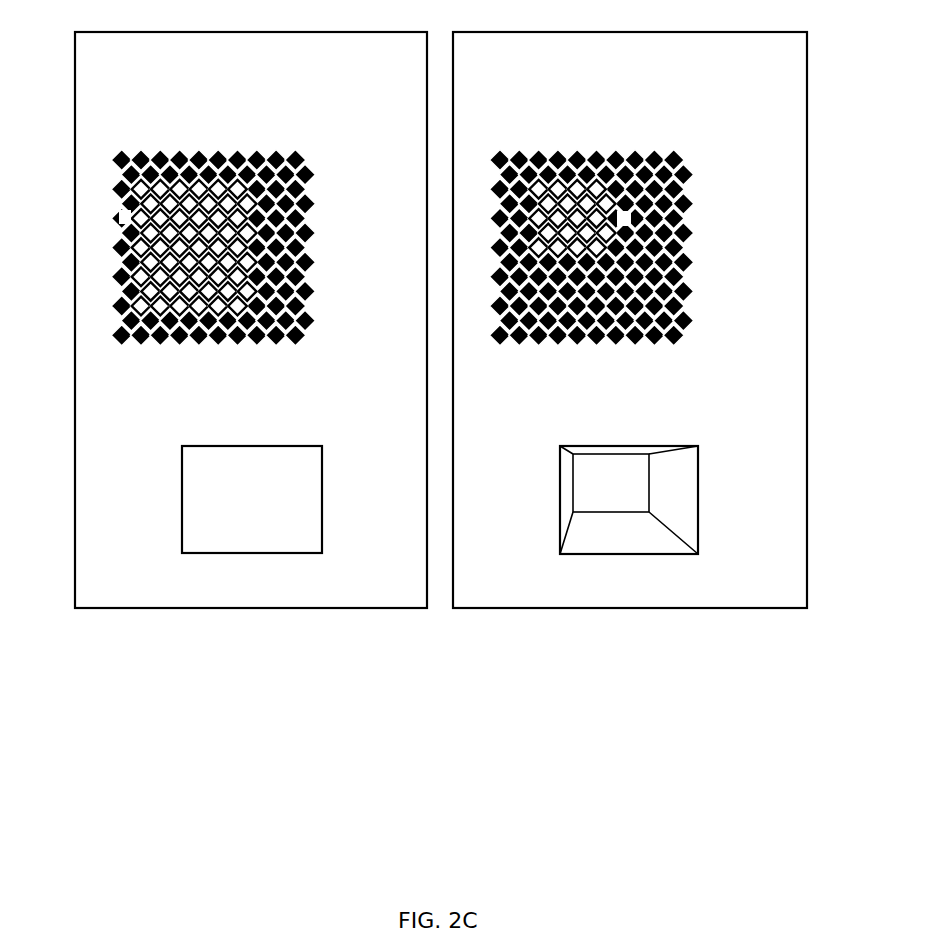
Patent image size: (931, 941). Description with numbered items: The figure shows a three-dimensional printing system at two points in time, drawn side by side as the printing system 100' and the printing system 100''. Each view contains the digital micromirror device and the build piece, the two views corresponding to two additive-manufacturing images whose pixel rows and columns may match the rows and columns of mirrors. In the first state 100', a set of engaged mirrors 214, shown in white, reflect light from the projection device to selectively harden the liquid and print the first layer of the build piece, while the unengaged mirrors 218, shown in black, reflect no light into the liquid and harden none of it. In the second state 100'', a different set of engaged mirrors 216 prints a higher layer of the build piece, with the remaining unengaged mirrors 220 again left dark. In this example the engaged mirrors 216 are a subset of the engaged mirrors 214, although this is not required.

The 3D printing system 100' is at (251, 304).
The 3D printing system 100'' is at (630, 304).
The engaged mirrors 214 is at (119, 217).
The engaged mirrors 216 is at (628, 218).
The unengaged mirrors 218 is at (344, 393).
The unengaged mirrors 220 is at (722, 393).